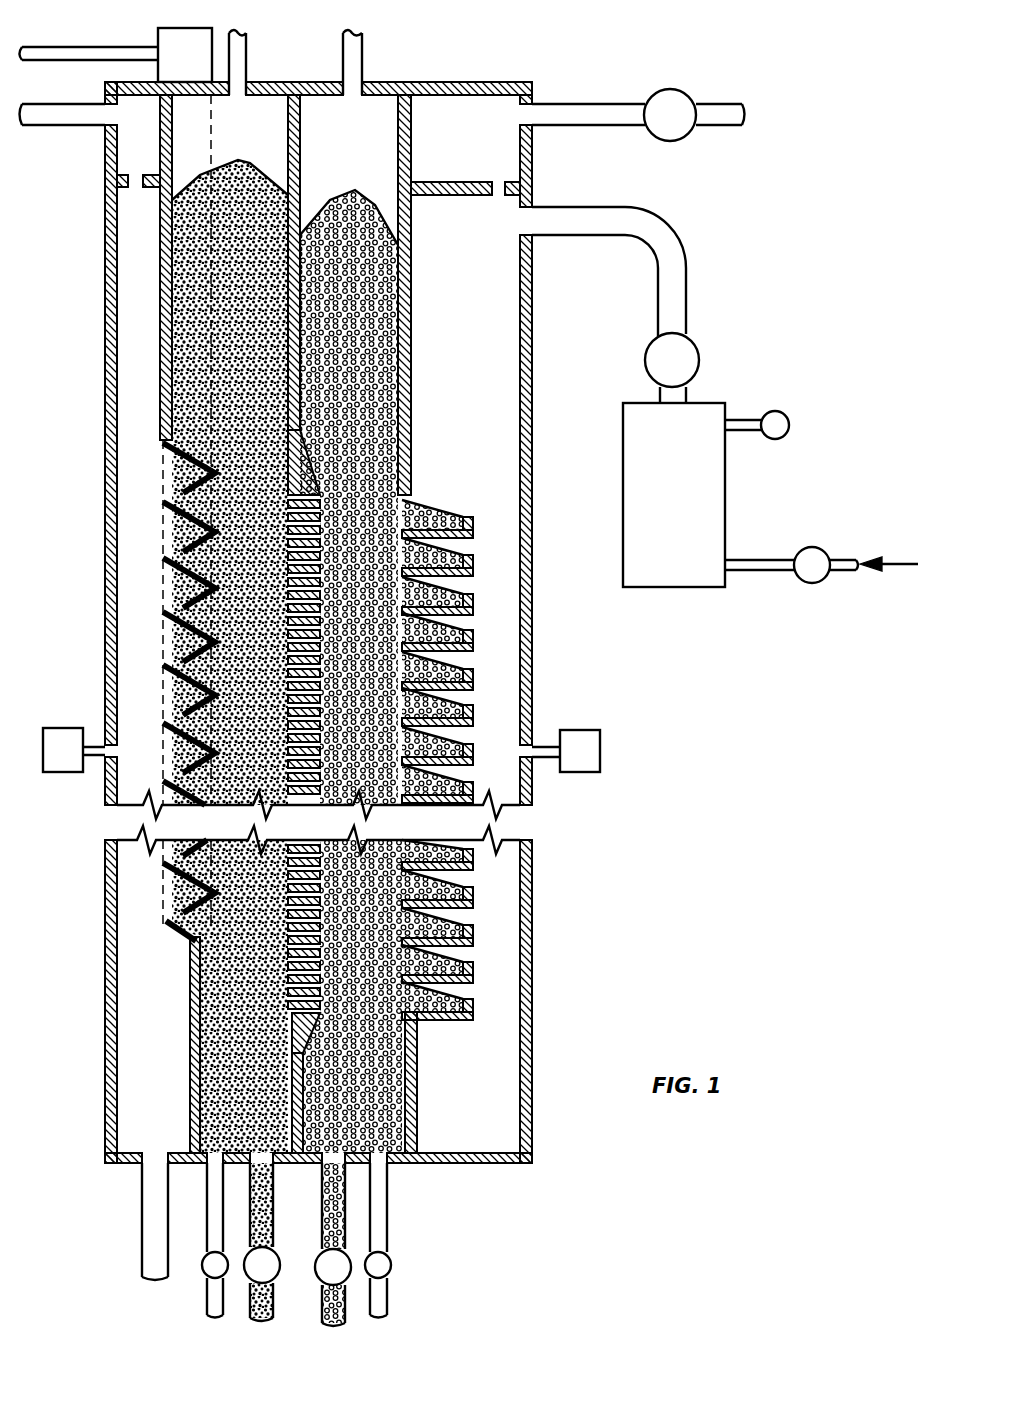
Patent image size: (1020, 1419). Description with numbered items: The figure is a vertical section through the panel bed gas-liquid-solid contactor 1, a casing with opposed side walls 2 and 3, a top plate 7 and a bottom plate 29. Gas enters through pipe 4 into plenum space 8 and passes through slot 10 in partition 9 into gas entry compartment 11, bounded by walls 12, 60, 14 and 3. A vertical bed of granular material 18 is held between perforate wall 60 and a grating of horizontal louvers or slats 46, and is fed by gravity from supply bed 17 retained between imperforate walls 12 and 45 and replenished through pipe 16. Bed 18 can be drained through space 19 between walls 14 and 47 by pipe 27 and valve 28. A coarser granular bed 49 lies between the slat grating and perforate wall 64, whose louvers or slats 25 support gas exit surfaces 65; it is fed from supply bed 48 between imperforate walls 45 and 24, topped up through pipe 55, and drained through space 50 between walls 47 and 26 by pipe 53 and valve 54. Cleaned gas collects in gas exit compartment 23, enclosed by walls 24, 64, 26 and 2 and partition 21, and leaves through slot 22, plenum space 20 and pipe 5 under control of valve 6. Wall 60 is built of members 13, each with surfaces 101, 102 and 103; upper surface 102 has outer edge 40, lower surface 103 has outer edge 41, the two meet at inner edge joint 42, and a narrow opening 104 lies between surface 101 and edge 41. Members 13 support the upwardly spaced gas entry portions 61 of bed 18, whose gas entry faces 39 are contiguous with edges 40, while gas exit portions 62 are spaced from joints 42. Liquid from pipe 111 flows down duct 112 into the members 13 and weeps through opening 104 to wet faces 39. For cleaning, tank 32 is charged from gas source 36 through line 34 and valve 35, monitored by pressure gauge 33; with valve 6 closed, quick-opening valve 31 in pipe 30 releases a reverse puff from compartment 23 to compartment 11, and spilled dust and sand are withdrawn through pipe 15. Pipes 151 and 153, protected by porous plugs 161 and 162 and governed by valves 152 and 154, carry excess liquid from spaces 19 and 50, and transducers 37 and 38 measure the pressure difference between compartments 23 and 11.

The panel bed gas-liquid-solid contactor 1 is at (92, 622).
The side wall 2 is at (533, 325).
The side wall 3 is at (104, 388).
The gas-entry pipe 4 is at (72, 128).
The pipe 5 is at (610, 104).
The valve 6 is at (690, 96).
The top plate 7 is at (282, 82).
The plenum space 8 is at (140, 123).
The partition 9 is at (122, 188).
The slot 10 is at (138, 190).
The gas entry compartment 11 is at (146, 343).
The imperforate wall 12 is at (160, 292).
The member 13 is at (170, 468).
The wall 14 is at (190, 1090).
The pipe 15 is at (140, 1210).
The pipe 16 is at (248, 50).
The supply bed 17 is at (256, 260).
The bed of granular material 18 is at (256, 548).
The space 19 is at (268, 1003).
The plenum space 20 is at (485, 133).
The partition 21 is at (470, 182).
The slot 22 is at (497, 200).
The gas exit compartment 23 is at (485, 378).
The imperforate wall 24 is at (411, 285).
The louvers or slats 25 is at (498, 562).
The wall 26 is at (418, 1062).
The pipe 27 is at (275, 1205).
The valve 28 is at (280, 1262).
The bottom plate 29 is at (120, 1164).
The pipe 30 is at (598, 207).
The quick-opening valve 31 is at (698, 342).
The tank 32 is at (726, 470).
The pressure gauge 33 is at (788, 412).
The line 34 is at (755, 572).
The valve 35 is at (814, 584).
The source of gas under pressure 36 is at (897, 578).
The transducer 37 is at (82, 728).
The transducer 38 is at (592, 730).
The gas entry faces 39 is at (175, 542).
The outer edge 40 is at (165, 690).
The outer edge 41 is at (200, 712).
The inner edge joint 42 is at (100, 650).
The imperforate wall 45 is at (349, 497).
The louvers or slats 46 is at (322, 575).
The wall 47 is at (285, 1092).
The supply bed 48 is at (372, 385).
The granular material bed 49 is at (374, 668).
The space 50 is at (365, 1063).
The pipe 53 is at (310, 1223).
The valve 54 is at (318, 1275).
The pipe 55 is at (364, 50).
The perforate wall 60 is at (165, 640).
The gas entry portions 61 is at (168, 728).
The gas exit portions 62 is at (274, 713).
The perforate wall 64 is at (485, 645).
The gas exit surfaces 65 is at (455, 708).
The surface 101 is at (178, 898).
The upper surface 102 is at (208, 860).
The lower surface 103 is at (210, 895).
The narrow opening 104 is at (170, 775).
The pipe 111 is at (120, 47).
The duct 112 is at (163, 578).
The pipe 151 is at (210, 1205).
The valve 152 is at (204, 1273).
The pipe 153 is at (390, 1212).
The valve 154 is at (392, 1265).
The porous plug 161 is at (212, 1166).
The porous plug 162 is at (392, 1166).